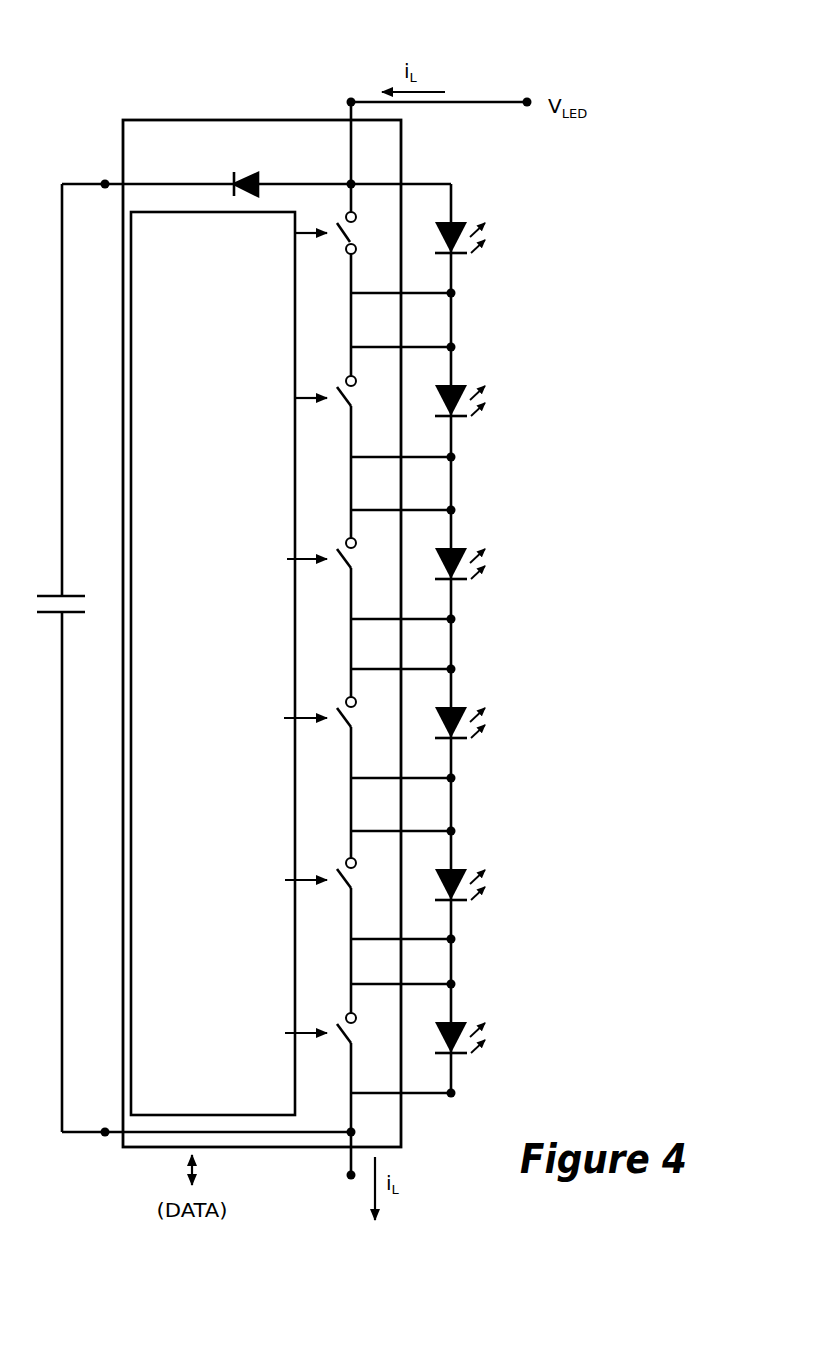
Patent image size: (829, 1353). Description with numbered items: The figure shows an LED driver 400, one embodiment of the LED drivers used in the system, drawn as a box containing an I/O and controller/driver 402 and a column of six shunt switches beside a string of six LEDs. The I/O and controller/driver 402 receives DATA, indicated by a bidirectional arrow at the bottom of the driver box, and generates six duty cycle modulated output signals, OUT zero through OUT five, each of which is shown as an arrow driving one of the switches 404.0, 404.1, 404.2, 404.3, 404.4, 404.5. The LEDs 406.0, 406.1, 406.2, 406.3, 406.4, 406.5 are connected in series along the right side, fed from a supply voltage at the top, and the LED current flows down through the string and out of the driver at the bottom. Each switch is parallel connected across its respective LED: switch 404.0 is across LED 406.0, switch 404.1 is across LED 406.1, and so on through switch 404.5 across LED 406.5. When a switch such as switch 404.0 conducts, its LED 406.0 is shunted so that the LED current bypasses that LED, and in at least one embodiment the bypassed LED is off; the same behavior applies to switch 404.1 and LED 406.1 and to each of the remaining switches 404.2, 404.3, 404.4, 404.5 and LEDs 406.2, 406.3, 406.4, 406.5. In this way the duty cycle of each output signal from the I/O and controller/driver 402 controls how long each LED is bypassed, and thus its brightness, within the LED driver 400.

The LED driver 400 is at (150, 120).
The I/O and controller/driver 402 is at (195, 686).
The switch 404.0 is at (337, 241).
The switch 404.1 is at (338, 415).
The switch 404.2 is at (338, 540).
The switch 404.3 is at (338, 730).
The switch 404.4 is at (337, 895).
The switch 404.5 is at (338, 1040).
The LED 406.0 is at (462, 222).
The LED 406.1 is at (462, 385).
The LED 406.2 is at (462, 548).
The LED 406.3 is at (462, 707).
The LED 406.4 is at (462, 869).
The LED 406.5 is at (462, 1022).